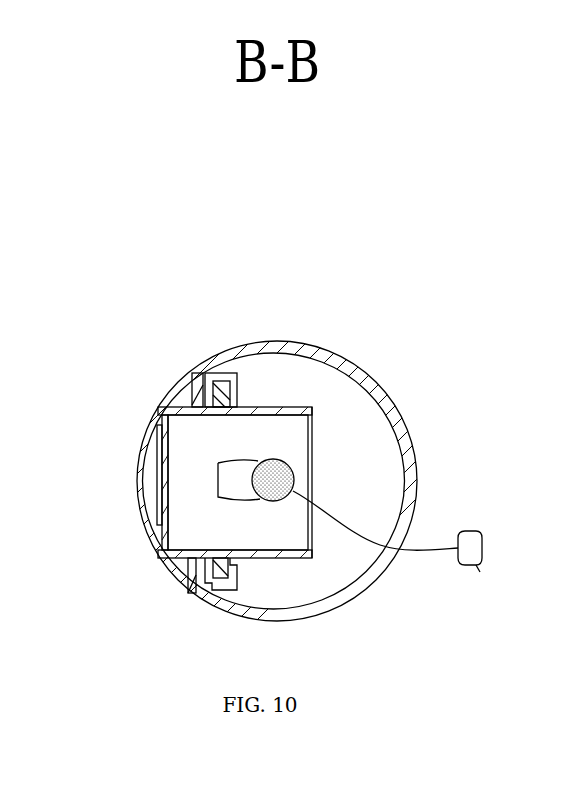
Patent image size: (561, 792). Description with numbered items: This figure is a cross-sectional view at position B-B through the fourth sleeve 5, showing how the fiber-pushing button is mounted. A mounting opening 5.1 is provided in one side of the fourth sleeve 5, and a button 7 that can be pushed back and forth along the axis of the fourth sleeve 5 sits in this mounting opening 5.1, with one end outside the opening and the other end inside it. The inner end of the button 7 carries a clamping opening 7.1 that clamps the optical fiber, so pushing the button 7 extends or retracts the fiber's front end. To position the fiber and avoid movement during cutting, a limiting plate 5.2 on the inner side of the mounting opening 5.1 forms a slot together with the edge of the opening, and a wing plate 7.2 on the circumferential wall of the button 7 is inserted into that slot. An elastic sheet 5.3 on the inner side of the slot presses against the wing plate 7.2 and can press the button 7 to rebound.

The fourth sleeve 5 is at (335, 363).
The mounting opening 5.1 is at (215, 535).
The limiting plate 5.2 is at (232, 390).
The elastic sheet 5.3 is at (210, 398).
The button 7 is at (195, 560).
The clamping opening 7.1 is at (230, 485).
The wing plate 7.2 is at (208, 405).